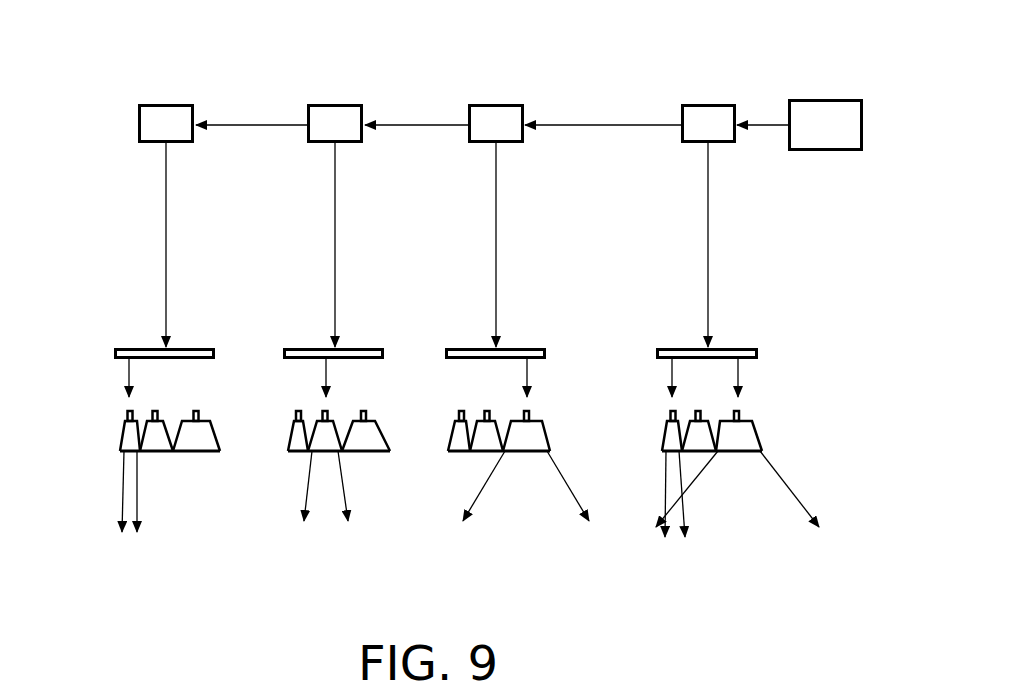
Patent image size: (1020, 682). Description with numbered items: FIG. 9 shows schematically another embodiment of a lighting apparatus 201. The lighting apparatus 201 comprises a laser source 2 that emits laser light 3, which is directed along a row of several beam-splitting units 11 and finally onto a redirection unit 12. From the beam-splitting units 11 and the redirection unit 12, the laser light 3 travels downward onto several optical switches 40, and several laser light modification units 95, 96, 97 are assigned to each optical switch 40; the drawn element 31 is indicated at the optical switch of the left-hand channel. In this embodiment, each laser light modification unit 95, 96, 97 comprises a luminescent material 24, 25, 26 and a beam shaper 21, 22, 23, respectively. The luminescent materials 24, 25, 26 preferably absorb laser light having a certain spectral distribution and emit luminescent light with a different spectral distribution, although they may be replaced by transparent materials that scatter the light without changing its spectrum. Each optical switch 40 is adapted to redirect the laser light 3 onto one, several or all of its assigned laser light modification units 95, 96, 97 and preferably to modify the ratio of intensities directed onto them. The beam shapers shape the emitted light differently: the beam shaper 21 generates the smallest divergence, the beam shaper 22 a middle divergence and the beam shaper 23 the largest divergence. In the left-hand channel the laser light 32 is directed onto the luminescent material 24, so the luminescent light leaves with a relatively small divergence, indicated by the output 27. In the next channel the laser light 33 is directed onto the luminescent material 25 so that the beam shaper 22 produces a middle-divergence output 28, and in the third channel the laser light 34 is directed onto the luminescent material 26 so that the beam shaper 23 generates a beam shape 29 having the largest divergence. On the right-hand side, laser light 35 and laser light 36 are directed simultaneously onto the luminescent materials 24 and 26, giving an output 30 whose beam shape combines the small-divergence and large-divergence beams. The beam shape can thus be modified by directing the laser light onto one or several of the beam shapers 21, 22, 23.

The laser source 2 is at (826, 99).
The beam-splitting unit 11 is at (333, 104).
The redirection unit 12 is at (166, 104).
The lighting apparatus 201 is at (611, 72).
The laser light 3 is at (167, 209).
The optical element 31 is at (203, 348).
The optical switch 40 is at (121, 348).
The laser light 32 is at (128, 380).
The laser light 33 is at (329, 385).
The laser light 34 is at (530, 385).
The laser light 35 is at (670, 380).
The laser light 36 is at (740, 380).
The beam shaper 21 is at (120, 445).
The beam shaper 22 is at (158, 455).
The beam shaper 23 is at (205, 455).
The luminescent material 24 is at (125, 415).
The luminescent material 25 is at (158, 409).
The luminescent material 26 is at (198, 409).
The laser light modification unit 95 is at (112, 436).
The laser light modification unit 96 is at (147, 470).
The laser light modification unit 97 is at (224, 428).
The first light distribution 27 is at (117, 559).
The second light distribution 28 is at (319, 541).
The beam shape 29 is at (497, 541).
The fourth light distribution 30 is at (721, 541).